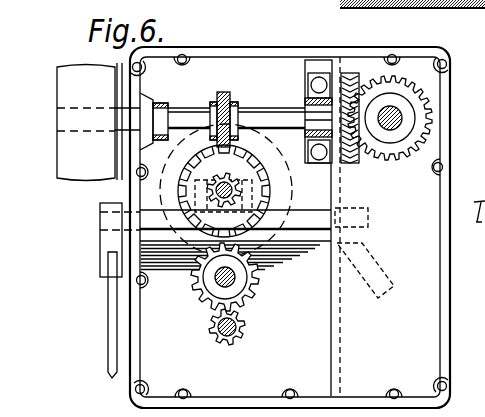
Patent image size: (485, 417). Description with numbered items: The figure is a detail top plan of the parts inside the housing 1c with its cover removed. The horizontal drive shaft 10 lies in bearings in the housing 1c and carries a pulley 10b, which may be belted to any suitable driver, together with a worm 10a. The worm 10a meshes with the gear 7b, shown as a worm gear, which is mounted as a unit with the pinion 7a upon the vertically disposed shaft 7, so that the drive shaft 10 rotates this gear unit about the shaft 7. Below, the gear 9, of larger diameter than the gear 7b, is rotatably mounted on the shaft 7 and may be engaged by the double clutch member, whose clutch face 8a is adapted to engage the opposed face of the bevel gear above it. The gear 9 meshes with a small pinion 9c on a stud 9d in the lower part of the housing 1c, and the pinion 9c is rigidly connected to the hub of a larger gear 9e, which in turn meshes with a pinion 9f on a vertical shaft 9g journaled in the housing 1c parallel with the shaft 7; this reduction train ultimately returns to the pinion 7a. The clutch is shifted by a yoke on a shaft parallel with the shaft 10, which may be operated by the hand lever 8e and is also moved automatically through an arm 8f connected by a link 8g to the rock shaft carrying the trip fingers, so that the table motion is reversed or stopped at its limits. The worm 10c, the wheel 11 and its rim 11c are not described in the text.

The housing 1c is at (133, 373).
The vertically disposed shaft 7 is at (197, 183).
The pinion 7a is at (233, 181).
The gear 7b is at (285, 176).
The clutch face 8a is at (318, 217).
The hand lever 8e is at (377, 255).
The arm 8f is at (101, 245).
The link 8g is at (108, 325).
The gear 9 is at (194, 267).
The small pinion 9c is at (248, 281).
The stud 9d is at (213, 287).
The larger gear 9e is at (243, 304).
The pinion 9f is at (240, 333).
The vertical shaft 9g is at (217, 335).
The horizontal drive shaft 10 is at (197, 104).
The worm 10a is at (232, 99).
The pulley 10b is at (62, 67).
The worm 10c is at (360, 161).
The worm wheel hub 11 is at (391, 128).
The worm wheel 11c is at (422, 107).